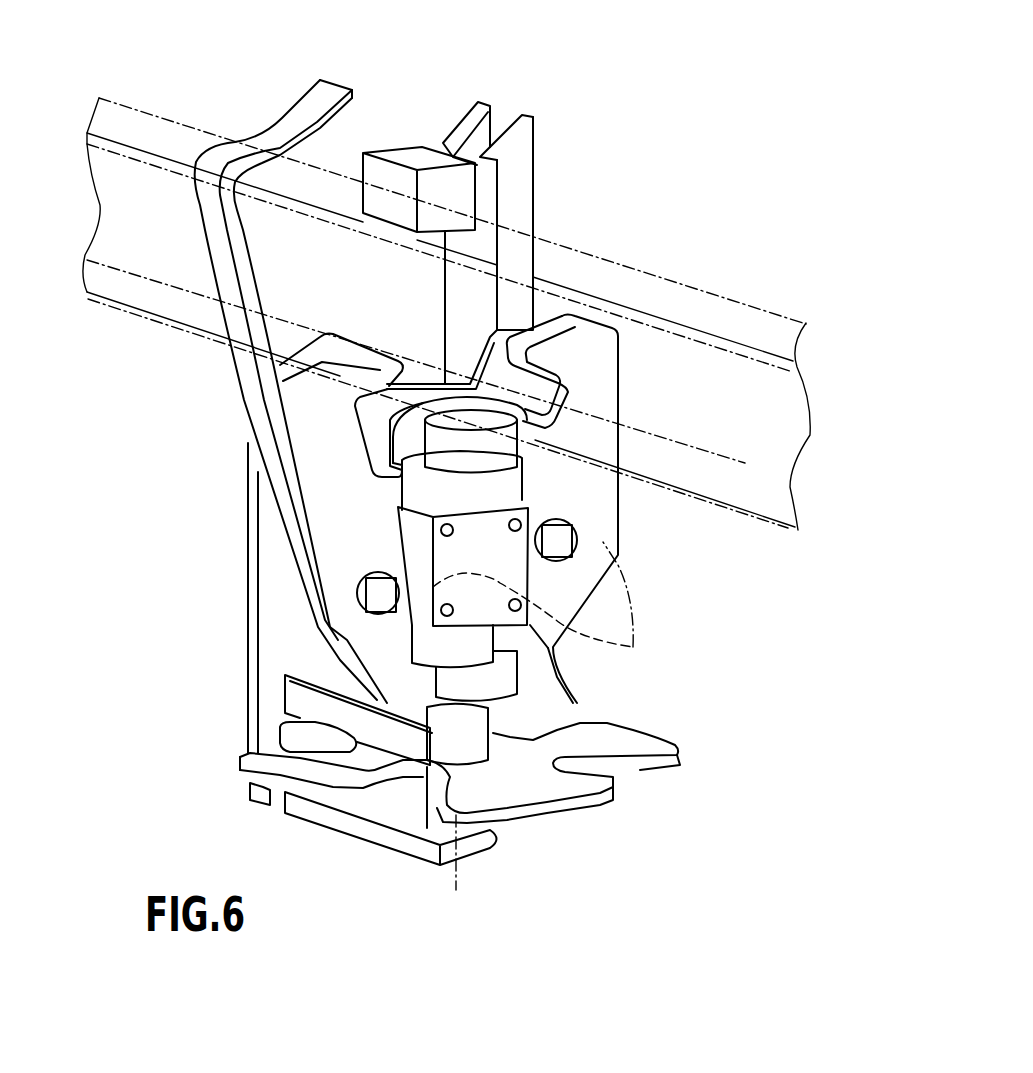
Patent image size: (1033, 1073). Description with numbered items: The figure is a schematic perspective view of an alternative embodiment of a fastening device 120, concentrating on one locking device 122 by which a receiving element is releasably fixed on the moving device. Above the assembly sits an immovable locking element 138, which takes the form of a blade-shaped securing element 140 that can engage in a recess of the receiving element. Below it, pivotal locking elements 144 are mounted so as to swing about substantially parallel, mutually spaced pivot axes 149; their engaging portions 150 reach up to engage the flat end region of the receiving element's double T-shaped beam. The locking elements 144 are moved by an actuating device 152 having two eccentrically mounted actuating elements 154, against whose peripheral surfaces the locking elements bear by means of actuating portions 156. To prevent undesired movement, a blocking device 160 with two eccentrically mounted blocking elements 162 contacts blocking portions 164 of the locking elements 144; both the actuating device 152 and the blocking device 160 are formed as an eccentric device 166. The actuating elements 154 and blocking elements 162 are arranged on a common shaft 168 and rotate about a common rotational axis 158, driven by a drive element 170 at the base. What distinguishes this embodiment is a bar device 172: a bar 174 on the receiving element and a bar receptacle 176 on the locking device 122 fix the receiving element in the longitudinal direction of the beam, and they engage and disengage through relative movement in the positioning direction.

The fastening device 120 is at (613, 113).
The locking device 122 is at (627, 187).
The locking element 138 is at (253, 137).
The securing element 140 is at (320, 97).
The locking elements 144 is at (287, 123).
The pivot axes 149 is at (633, 647).
The engaging portions 150 is at (300, 375).
The actuating device 152 is at (575, 307).
The actuating elements 154 is at (555, 540).
The actuating portions 156 is at (433, 465).
The rotational axis 158 is at (456, 870).
The blocking device 160 is at (387, 670).
The blocking elements 162 is at (447, 640).
The blocking portions 164 is at (497, 687).
The eccentric device 166 is at (405, 686).
The common shaft 168 is at (478, 822).
The drive element 170 is at (633, 752).
The bar device 172 is at (535, 97).
The bar 174 is at (457, 123).
The bar receptacle 176 is at (487, 123).